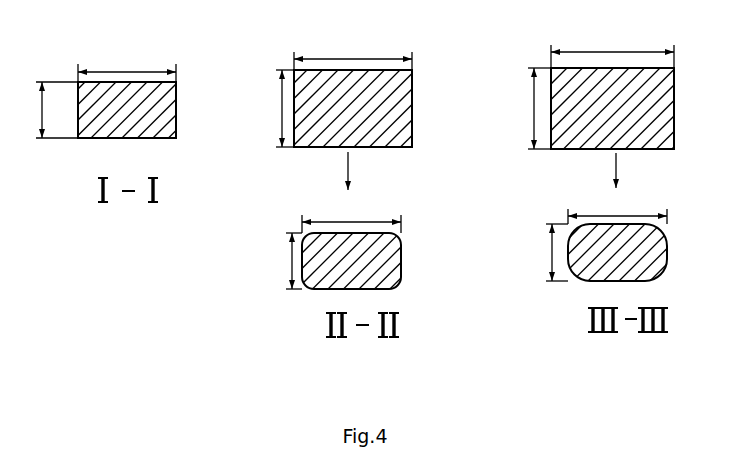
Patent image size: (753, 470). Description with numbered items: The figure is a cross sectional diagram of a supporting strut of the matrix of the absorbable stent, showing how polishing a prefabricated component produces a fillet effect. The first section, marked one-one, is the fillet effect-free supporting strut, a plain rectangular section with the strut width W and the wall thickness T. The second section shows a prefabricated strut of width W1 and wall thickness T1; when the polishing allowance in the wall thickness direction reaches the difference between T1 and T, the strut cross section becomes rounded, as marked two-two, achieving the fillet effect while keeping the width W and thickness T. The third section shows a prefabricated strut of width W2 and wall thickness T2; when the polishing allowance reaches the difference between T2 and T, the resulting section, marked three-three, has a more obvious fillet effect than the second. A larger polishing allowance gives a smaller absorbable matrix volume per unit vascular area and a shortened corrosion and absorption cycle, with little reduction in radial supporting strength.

The strut width W is at (372, 140).
The wall thickness T is at (294, 185).
The prefabricated strut width W1 is at (353, 52).
The prefabricated wall thickness T1 is at (275, 108).
The prefabricated strut width W2 is at (612, 47).
The prefabricated wall thickness T2 is at (529, 108).